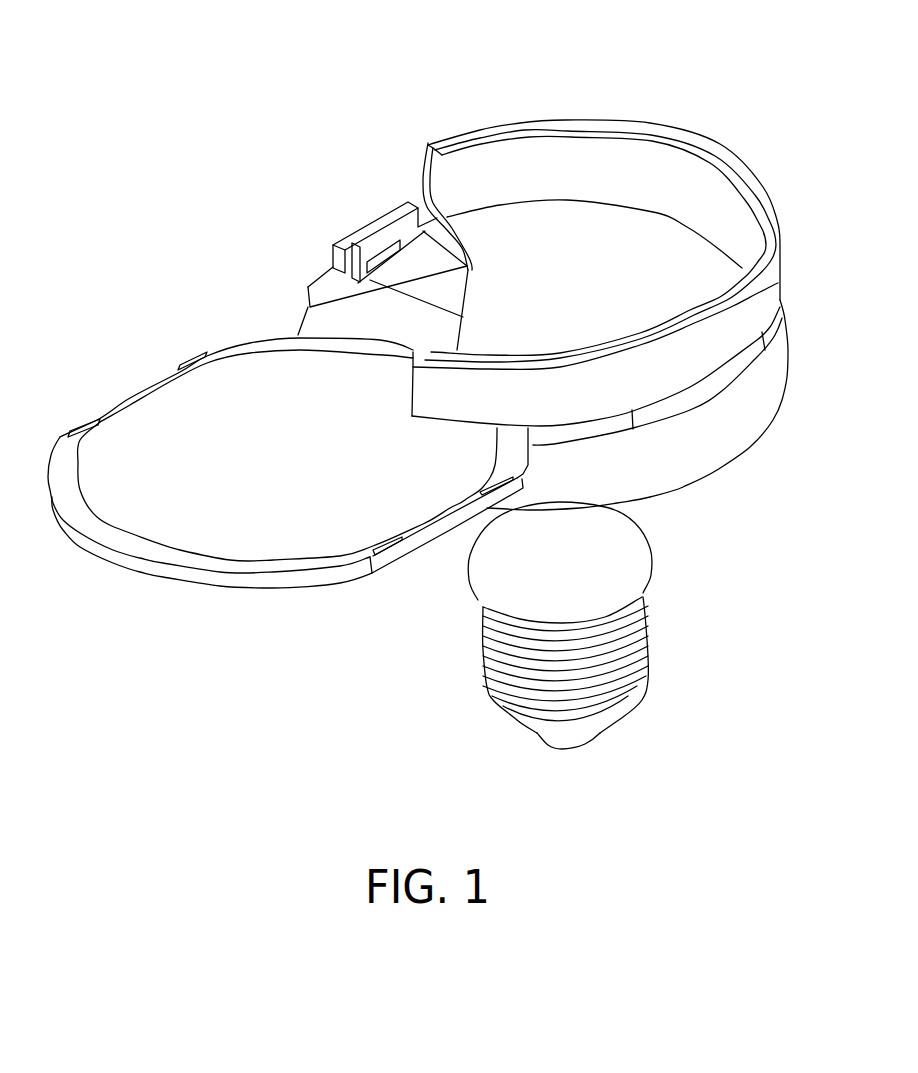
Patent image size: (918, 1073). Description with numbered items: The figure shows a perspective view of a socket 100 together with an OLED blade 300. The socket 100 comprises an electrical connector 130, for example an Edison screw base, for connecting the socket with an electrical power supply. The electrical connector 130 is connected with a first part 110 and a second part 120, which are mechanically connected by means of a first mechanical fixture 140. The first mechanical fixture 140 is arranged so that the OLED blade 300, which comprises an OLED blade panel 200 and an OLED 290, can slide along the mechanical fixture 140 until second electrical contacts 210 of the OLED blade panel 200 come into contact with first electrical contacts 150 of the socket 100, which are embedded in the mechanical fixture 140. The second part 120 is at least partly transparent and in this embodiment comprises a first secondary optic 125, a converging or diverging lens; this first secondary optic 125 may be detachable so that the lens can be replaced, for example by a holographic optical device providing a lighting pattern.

The socket 100 is at (254, 94).
The first part 110 is at (707, 460).
The second part 120 is at (560, 132).
The first secondary optic 125 is at (640, 240).
The electrical connector 130 is at (573, 740).
The first mechanical fixture 140 is at (315, 280).
The first electrical contacts 150 is at (380, 247).
The OLED blade panel 200 is at (273, 588).
The second electrical contacts 210 is at (128, 400).
The OLED 290 is at (238, 367).
The OLED blade 300 is at (163, 597).